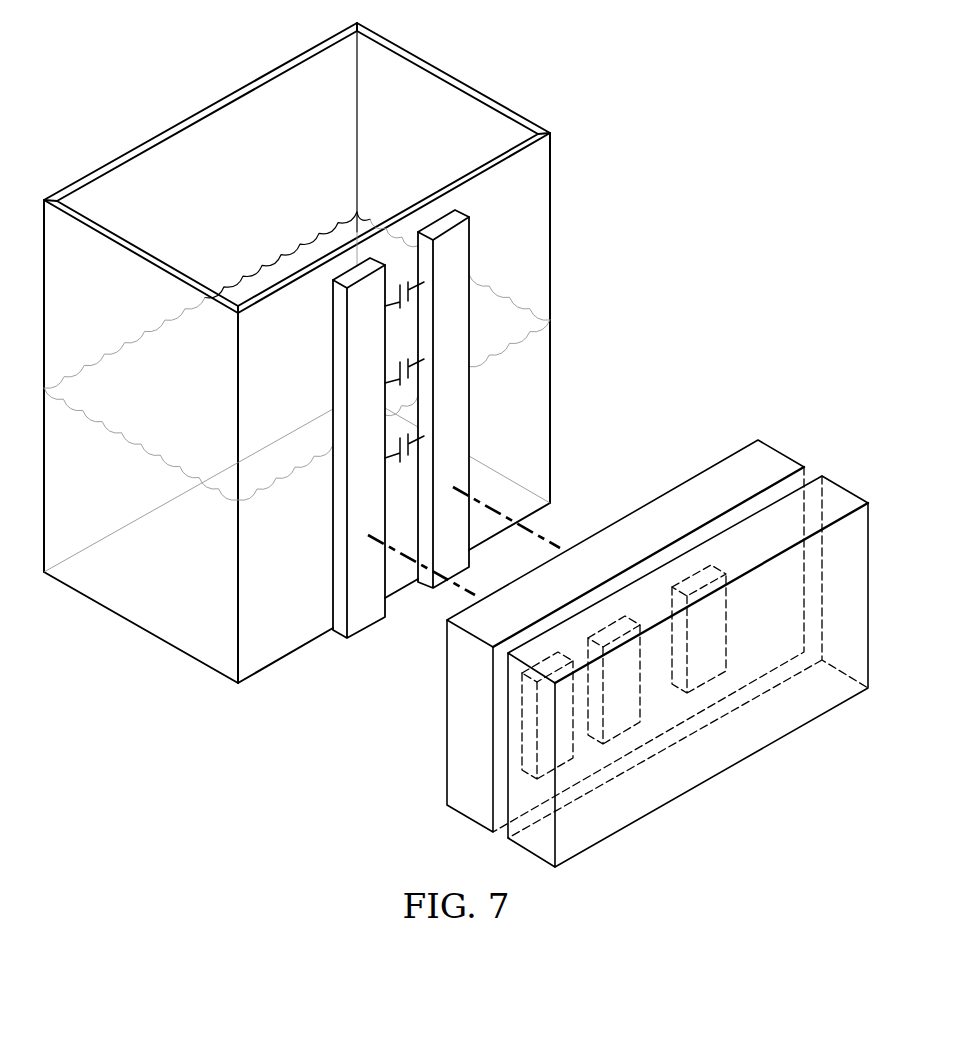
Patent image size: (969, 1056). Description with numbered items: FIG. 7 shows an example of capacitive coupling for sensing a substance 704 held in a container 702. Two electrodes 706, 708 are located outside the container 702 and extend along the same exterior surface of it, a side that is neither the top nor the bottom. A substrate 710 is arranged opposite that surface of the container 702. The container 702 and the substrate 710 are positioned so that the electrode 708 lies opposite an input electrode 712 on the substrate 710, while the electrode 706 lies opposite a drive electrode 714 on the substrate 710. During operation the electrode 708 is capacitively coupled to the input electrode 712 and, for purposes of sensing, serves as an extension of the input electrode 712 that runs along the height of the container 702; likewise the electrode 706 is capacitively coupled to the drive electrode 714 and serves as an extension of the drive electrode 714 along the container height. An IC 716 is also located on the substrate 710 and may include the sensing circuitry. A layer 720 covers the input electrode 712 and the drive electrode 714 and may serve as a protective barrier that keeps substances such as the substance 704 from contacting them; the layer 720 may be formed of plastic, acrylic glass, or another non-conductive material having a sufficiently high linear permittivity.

The container 702 is at (470, 58).
The substance 704 is at (120, 350).
The electrode 706 is at (360, 618).
The electrode 708 is at (462, 247).
The substrate 710 is at (833, 495).
The input electrode 712 is at (727, 655).
The drive electrode 714 is at (642, 703).
The IC 716 is at (573, 740).
The layer 720 is at (770, 462).